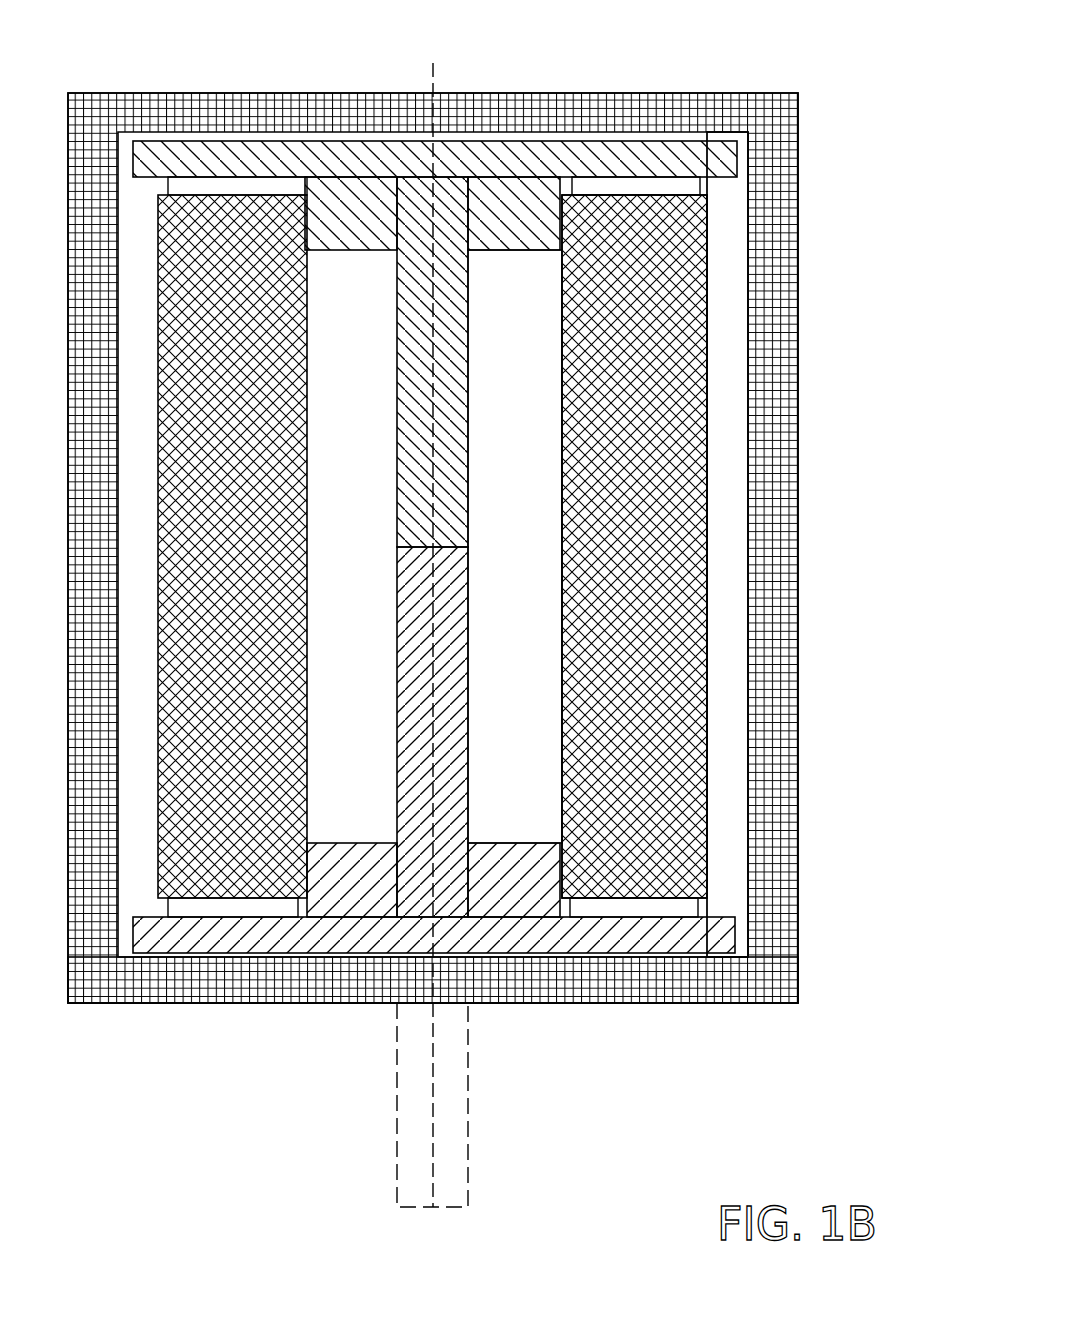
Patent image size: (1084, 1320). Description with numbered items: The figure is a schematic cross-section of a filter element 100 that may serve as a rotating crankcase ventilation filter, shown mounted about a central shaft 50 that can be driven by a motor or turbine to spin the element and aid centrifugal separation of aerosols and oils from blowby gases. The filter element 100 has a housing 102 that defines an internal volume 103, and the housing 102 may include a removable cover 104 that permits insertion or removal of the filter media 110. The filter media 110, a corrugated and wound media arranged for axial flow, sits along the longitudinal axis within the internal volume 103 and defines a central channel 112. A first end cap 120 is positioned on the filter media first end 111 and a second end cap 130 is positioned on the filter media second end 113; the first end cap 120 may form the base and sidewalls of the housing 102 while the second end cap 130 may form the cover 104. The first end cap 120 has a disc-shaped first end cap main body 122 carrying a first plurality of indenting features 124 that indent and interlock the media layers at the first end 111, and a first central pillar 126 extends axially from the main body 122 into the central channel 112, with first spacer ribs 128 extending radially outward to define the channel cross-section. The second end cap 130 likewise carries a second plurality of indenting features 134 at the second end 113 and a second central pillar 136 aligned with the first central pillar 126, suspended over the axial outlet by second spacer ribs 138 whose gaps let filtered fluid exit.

The filter element 100 is at (502, 603).
The housing 102 is at (798, 365).
The internal volume 103 is at (722, 417).
The cover 104 is at (790, 110).
The filter media 110 is at (647, 551).
The filter media first end 111 is at (706, 868).
The central channel 112 is at (508, 447).
The filter media second end 113 is at (712, 226).
The first end cap 120 is at (690, 973).
The first end cap main body 122 is at (582, 938).
The first plurality of indenting features 124 is at (232, 907).
The first central pillar 126 is at (452, 895).
The first spacer ribs 128 is at (322, 900).
The second end cap 130 is at (365, 140).
The second plurality of indenting features 134 is at (235, 187).
The second central pillar 136 is at (458, 187).
The second spacer ribs 138 is at (540, 197).
The central shaft 50 is at (474, 1164).